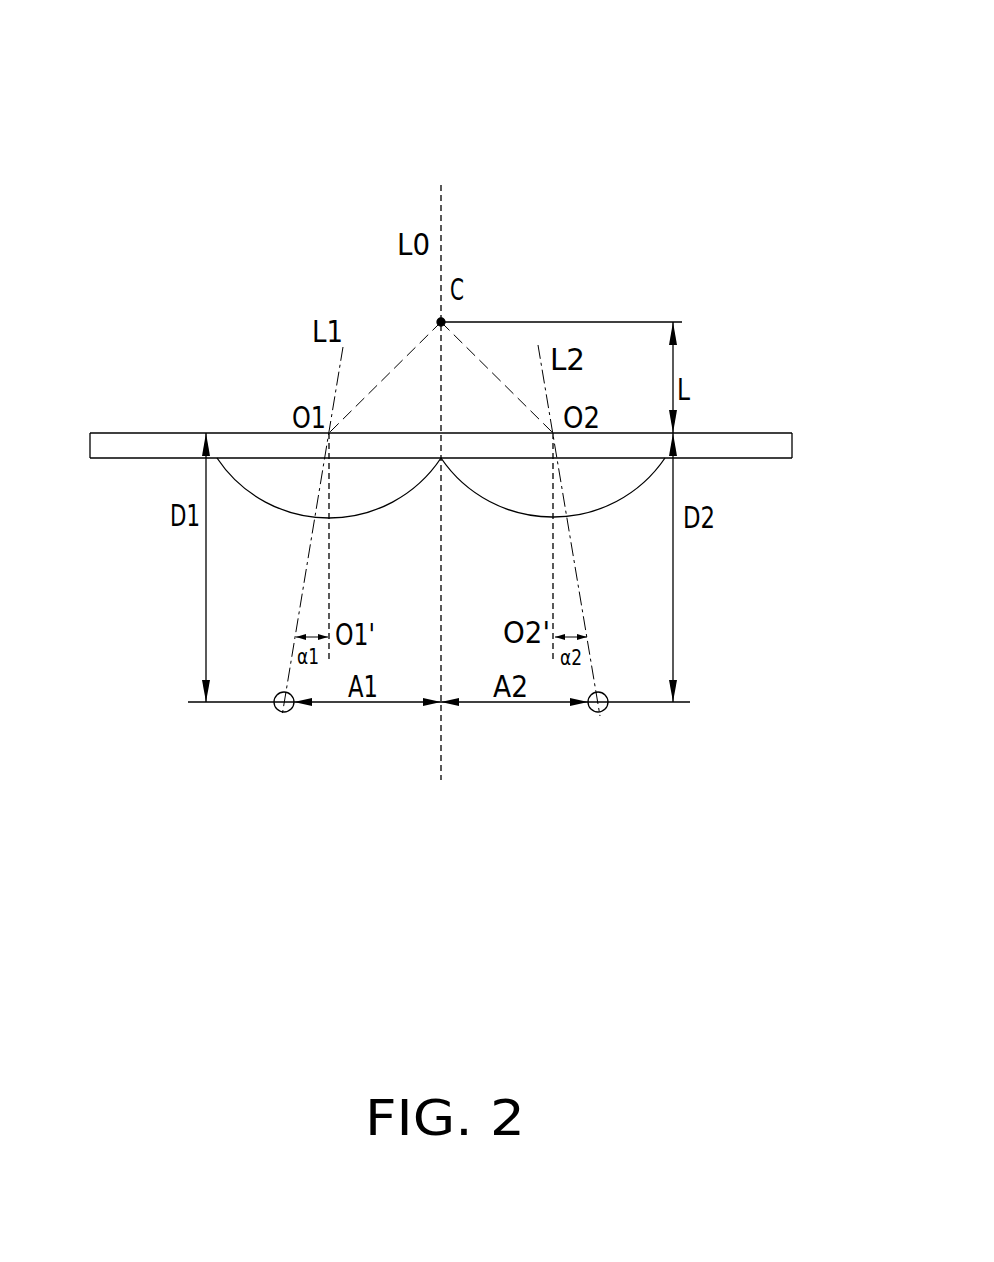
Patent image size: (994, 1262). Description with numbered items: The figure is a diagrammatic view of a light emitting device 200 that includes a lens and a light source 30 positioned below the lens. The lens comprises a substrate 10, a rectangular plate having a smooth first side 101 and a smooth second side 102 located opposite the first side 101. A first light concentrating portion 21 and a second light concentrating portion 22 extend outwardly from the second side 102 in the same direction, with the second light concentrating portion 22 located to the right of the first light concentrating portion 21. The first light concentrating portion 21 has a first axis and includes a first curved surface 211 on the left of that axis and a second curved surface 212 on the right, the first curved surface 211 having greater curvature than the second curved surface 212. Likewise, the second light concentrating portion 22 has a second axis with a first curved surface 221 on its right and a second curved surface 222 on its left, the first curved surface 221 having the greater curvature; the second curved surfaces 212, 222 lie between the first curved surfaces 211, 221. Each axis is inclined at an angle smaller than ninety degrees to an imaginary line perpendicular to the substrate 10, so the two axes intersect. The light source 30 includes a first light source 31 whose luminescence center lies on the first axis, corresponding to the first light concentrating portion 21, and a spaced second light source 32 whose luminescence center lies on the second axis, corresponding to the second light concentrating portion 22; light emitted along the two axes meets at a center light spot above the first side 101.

The light emitting device 200 is at (523, 103).
The substrate 10 is at (830, 363).
The first side 101 is at (718, 433).
The second side 102 is at (718, 458).
The first light concentrating portion 21 is at (92, 557).
The first curved surface 211 is at (262, 503).
The second curved surface 212 is at (373, 508).
The second light concentrating portion 22 is at (818, 553).
The first curved surface 221 is at (610, 508).
The second curved surface 222 is at (523, 512).
The light source 30 is at (537, 832).
The first light source 31 is at (286, 713).
The second light source 32 is at (597, 713).